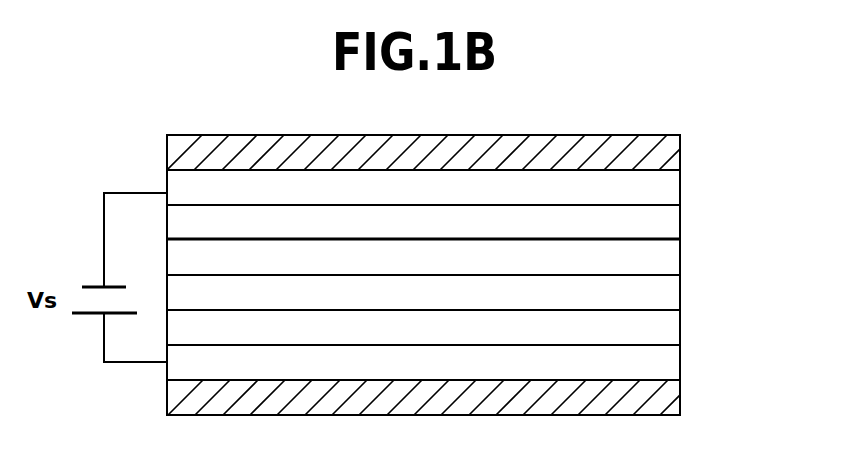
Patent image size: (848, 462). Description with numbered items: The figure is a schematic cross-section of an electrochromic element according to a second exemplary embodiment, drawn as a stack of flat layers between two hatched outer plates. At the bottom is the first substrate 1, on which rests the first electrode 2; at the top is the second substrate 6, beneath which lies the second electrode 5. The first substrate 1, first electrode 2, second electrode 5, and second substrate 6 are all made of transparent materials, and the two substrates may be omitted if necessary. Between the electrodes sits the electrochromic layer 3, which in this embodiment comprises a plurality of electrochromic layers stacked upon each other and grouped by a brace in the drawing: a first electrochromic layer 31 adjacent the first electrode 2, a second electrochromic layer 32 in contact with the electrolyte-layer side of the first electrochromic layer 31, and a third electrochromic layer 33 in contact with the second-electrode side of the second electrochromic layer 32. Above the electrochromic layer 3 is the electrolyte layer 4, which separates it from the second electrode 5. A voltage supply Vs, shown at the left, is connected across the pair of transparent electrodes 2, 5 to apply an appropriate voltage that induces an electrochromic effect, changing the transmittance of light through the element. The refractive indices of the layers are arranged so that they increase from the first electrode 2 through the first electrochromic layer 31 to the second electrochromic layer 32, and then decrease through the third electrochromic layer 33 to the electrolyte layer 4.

The first substrate 1 is at (667, 399).
The first electrode 2 is at (667, 364).
The electrochromic layer 3 is at (491, 291).
The first electrochromic layer 31 is at (468, 327).
The second electrochromic layer 32 is at (667, 294).
The third electrochromic layer 33 is at (667, 259).
The electrolyte layer 4 is at (667, 224).
The second electrode 5 is at (667, 190).
The second substrate 6 is at (667, 155).